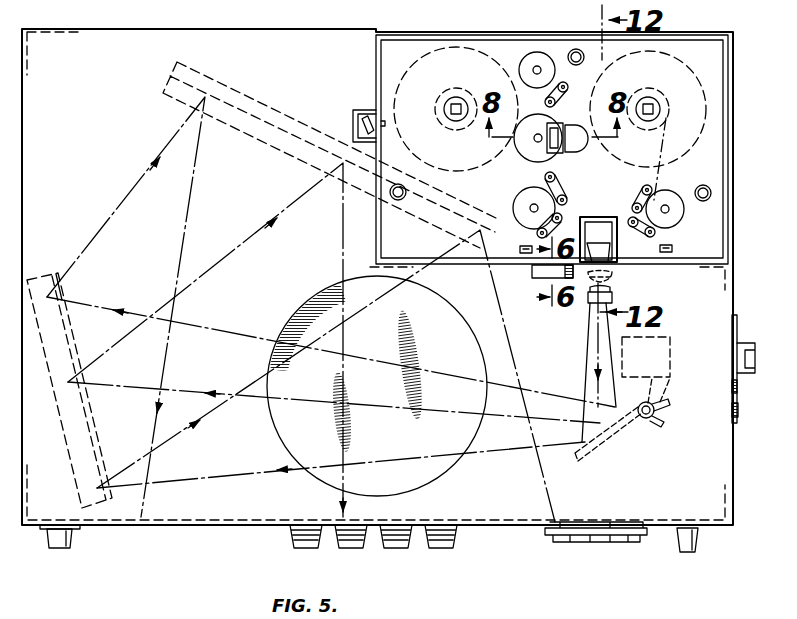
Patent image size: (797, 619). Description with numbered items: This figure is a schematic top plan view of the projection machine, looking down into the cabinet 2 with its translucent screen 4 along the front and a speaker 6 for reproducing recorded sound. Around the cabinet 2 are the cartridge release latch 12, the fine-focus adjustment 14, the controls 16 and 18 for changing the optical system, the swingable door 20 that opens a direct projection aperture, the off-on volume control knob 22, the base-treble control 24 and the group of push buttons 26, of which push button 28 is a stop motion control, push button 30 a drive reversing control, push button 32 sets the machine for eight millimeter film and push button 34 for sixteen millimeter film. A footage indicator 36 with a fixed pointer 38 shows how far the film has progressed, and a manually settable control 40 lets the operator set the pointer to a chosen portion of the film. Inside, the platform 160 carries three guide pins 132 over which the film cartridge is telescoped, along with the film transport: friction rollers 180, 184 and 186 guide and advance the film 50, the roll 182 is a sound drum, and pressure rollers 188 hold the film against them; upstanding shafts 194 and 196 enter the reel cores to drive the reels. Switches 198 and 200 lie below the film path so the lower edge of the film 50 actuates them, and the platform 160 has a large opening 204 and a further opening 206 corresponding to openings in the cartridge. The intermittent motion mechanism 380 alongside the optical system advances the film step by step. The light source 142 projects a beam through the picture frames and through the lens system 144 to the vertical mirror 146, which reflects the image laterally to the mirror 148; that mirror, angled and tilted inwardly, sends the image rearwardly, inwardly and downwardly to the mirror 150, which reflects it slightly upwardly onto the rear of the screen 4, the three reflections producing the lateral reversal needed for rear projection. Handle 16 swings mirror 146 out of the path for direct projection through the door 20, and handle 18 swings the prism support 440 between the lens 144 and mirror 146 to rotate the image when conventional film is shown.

The cabinet 2 is at (733, 481).
The translucent screen 4 is at (195, 521).
The speaker 6 is at (428, 471).
The cartridge release latch 12 is at (362, 123).
The fine-focus adjustment 14 is at (698, 541).
The control 16 is at (663, 424).
The control 18 is at (656, 407).
The swingable door 20 is at (602, 545).
The off-on volume control knob 22 is at (58, 550).
The base-treble control 24 is at (82, 529).
The group of push buttons 26 is at (341, 553).
The push button 28 is at (312, 549).
The push button 30 is at (357, 549).
The push button 32 is at (401, 549).
The push button 34 is at (450, 550).
The footage indicator 36 is at (737, 324).
The fixed pointer 38 is at (738, 410).
The manually settable control 40 is at (750, 362).
The film 50 is at (668, 143).
The guide pins 132 is at (392, 198).
The light source 142 is at (610, 221).
The lens system 144 is at (613, 296).
The vertical mirror 146 is at (588, 443).
The mirror 148 is at (97, 453).
The mirror 150 is at (258, 100).
The platform 160 is at (707, 173).
The friction roller 180 is at (544, 70).
The sound drum 182 is at (535, 160).
The friction roller 184 is at (513, 208).
The friction roller 186 is at (672, 218).
The pressure rollers 188 is at (557, 102).
The upstanding shaft 194 is at (457, 97).
The upstanding shaft 196 is at (660, 106).
The switch 198 is at (672, 250).
The switch 200 is at (510, 252).
The large opening 204 is at (610, 276).
The opening 206 is at (571, 154).
The intermittent motion mechanism 380 is at (532, 288).
The support 440 is at (662, 361).